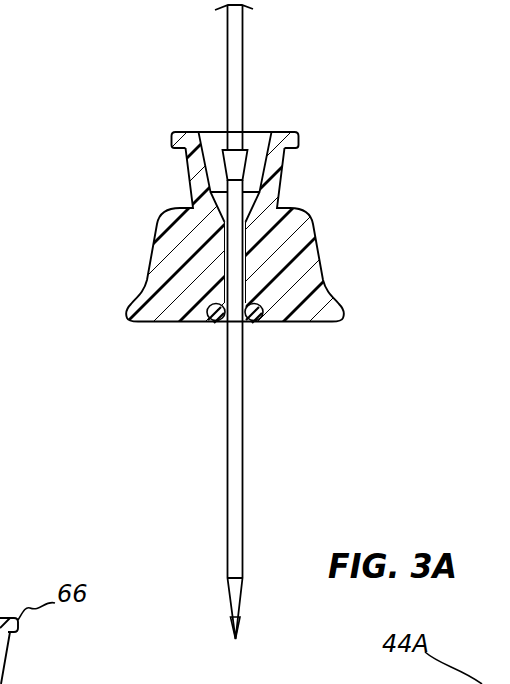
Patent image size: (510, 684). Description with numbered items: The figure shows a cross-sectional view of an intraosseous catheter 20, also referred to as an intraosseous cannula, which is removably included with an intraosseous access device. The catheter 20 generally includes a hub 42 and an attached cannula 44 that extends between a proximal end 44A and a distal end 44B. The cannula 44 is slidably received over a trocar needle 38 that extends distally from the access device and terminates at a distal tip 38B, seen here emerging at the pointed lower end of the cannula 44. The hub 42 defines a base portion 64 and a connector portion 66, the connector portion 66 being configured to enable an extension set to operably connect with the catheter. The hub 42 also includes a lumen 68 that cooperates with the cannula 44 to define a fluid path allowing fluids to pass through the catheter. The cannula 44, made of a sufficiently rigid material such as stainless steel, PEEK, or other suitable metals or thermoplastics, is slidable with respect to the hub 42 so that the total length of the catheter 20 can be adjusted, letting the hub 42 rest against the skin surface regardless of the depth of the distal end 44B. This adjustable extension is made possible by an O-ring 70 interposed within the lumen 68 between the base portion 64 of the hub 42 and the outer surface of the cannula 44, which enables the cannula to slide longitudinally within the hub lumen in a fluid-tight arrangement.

The intraosseous catheter 20 is at (162, 192).
The trocar needle 38 is at (232, 58).
The distal tip 38B is at (236, 637).
The hub 42 is at (160, 250).
The cannula 44 is at (247, 407).
The proximal end 44A is at (234, 150).
The distal end 44B is at (233, 616).
The base portion 64 is at (303, 265).
The connector portion 66 is at (283, 132).
The lumen 68 is at (237, 234).
The O-ring 70 is at (263, 316).